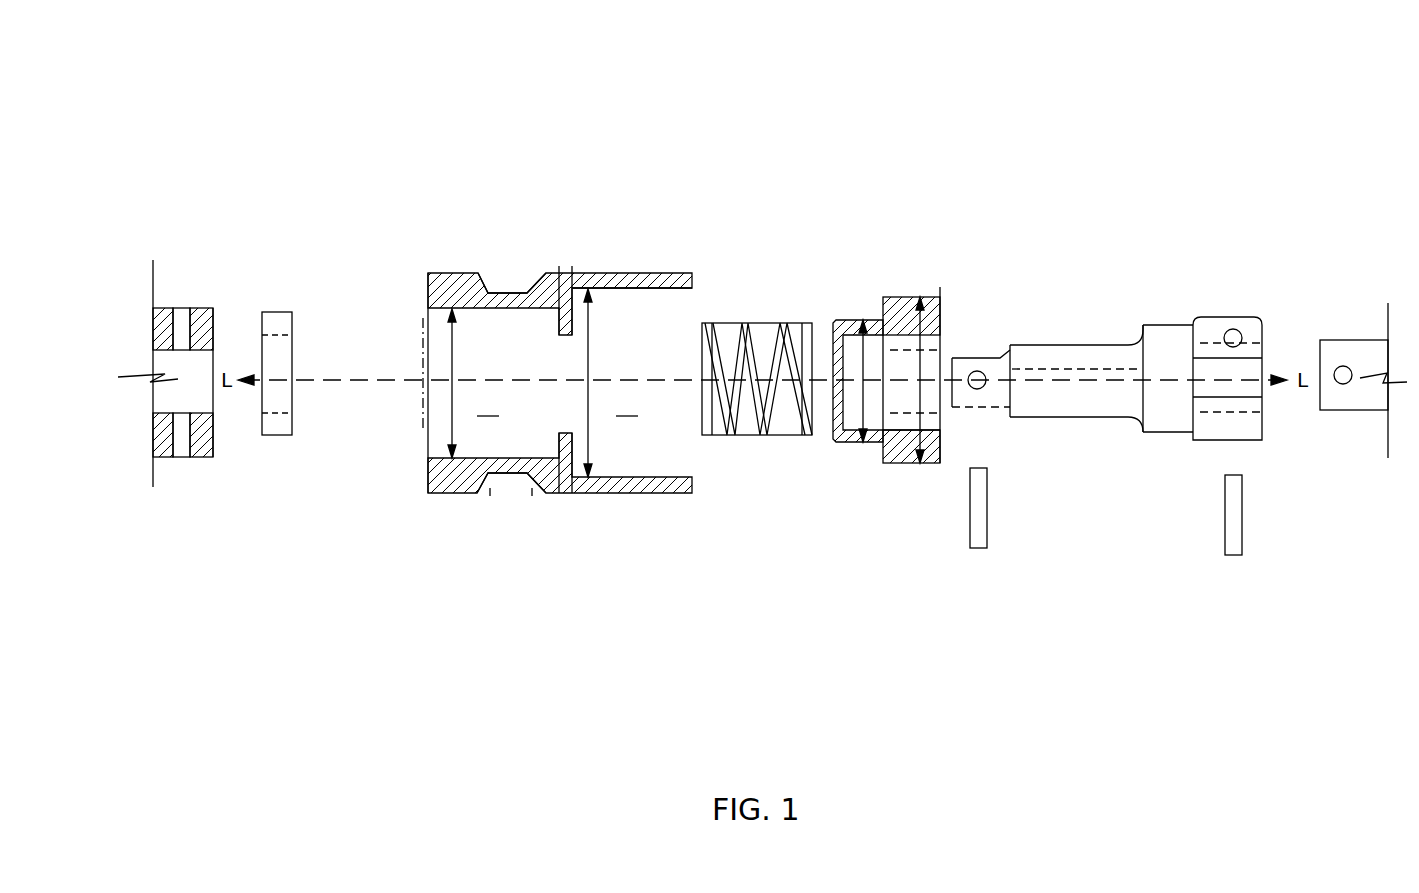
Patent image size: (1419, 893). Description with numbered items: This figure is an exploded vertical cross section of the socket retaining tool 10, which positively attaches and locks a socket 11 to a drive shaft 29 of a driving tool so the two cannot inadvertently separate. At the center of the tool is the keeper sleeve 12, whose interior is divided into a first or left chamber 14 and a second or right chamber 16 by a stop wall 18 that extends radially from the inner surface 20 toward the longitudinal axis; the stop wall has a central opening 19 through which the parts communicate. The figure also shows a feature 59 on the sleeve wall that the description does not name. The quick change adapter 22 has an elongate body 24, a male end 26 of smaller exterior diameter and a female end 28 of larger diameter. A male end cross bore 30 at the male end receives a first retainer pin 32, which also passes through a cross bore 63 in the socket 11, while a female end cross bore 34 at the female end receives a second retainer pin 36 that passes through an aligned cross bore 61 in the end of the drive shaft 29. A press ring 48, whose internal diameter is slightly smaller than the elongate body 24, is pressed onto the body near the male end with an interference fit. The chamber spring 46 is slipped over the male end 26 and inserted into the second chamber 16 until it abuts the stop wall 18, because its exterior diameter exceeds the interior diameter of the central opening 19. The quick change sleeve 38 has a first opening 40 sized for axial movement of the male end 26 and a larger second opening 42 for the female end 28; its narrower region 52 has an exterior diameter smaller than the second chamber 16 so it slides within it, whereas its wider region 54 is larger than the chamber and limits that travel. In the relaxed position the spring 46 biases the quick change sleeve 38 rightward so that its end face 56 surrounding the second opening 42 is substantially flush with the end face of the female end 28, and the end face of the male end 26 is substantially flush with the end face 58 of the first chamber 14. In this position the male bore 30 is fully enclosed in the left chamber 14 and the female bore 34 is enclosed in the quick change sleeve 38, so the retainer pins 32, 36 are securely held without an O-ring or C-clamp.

The socket retaining tool 10 is at (1150, 120).
The socket 11 is at (200, 457).
The keeper sleeve 12 is at (573, 276).
The first chamber 14 is at (472, 383).
The second chamber 16 is at (609, 383).
The stop wall 18 is at (555, 320).
The central opening 19 is at (565, 407).
The inner surface 20 is at (598, 290).
The quick change adapter 22 is at (1172, 325).
The elongate body 24 is at (1080, 345).
The male end 26 is at (952, 355).
The female end 28 is at (1255, 318).
The drive shaft 29 is at (1345, 410).
The male end cross bore 30 is at (977, 390).
The first retainer pin 32 is at (975, 548).
The female end cross bore 34 is at (1233, 329).
The second retainer pin 36 is at (1230, 555).
The quick change sleeve 38 is at (883, 300).
The first opening 40 is at (833, 355).
The second opening 42 is at (940, 412).
The chamber spring 46 is at (720, 437).
The press ring 48 is at (273, 427).
The narrower region 52 is at (850, 442).
The wider region 54 is at (912, 297).
The end face of quick change sleeve 56 is at (940, 312).
The end face of first chamber 58 is at (425, 295).
The groove 59 is at (500, 292).
The cross bore 61 is at (1345, 367).
The cross bore 63 is at (181, 318).